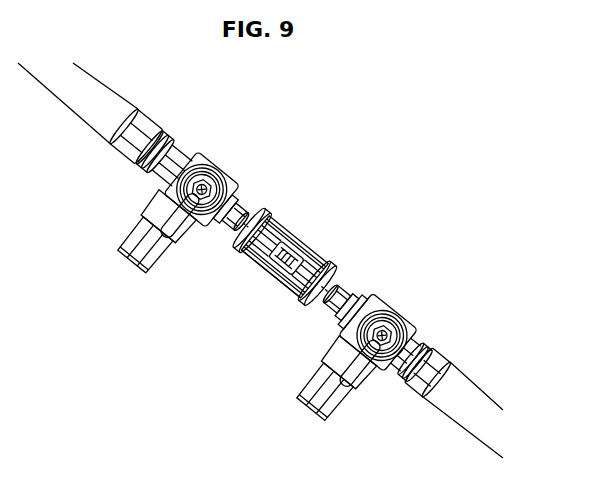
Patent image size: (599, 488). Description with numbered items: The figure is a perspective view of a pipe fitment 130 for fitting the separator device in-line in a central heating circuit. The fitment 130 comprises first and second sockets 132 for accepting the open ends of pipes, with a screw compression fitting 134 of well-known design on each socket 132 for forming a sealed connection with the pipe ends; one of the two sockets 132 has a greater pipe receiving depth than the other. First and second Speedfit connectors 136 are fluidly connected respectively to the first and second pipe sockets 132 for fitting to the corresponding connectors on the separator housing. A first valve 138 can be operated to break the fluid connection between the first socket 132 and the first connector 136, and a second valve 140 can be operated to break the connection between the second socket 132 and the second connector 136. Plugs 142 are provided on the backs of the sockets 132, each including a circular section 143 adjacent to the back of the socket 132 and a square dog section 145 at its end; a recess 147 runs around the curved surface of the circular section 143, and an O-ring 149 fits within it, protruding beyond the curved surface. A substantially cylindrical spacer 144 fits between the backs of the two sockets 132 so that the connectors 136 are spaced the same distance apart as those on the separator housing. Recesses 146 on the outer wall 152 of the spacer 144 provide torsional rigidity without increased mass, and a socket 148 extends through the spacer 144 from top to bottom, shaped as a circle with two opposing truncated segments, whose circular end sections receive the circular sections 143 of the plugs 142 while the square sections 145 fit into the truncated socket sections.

The fitment 130 is at (430, 135).
The socket 132 is at (126, 123).
The screw compression fitting 134 is at (152, 136).
The Speedfit connector 136 is at (131, 264).
The first valve 138 is at (219, 188).
The second valve 140 is at (391, 330).
The plug 142 is at (244, 208).
The circular section 143 is at (235, 197).
The spacer 144 is at (288, 282).
The square dog section 145 is at (325, 307).
The recess 146 is at (263, 266).
The recess 147 is at (358, 300).
The socket 148 is at (242, 235).
The O-ring 149 is at (337, 323).
The outer wall 152 is at (296, 240).